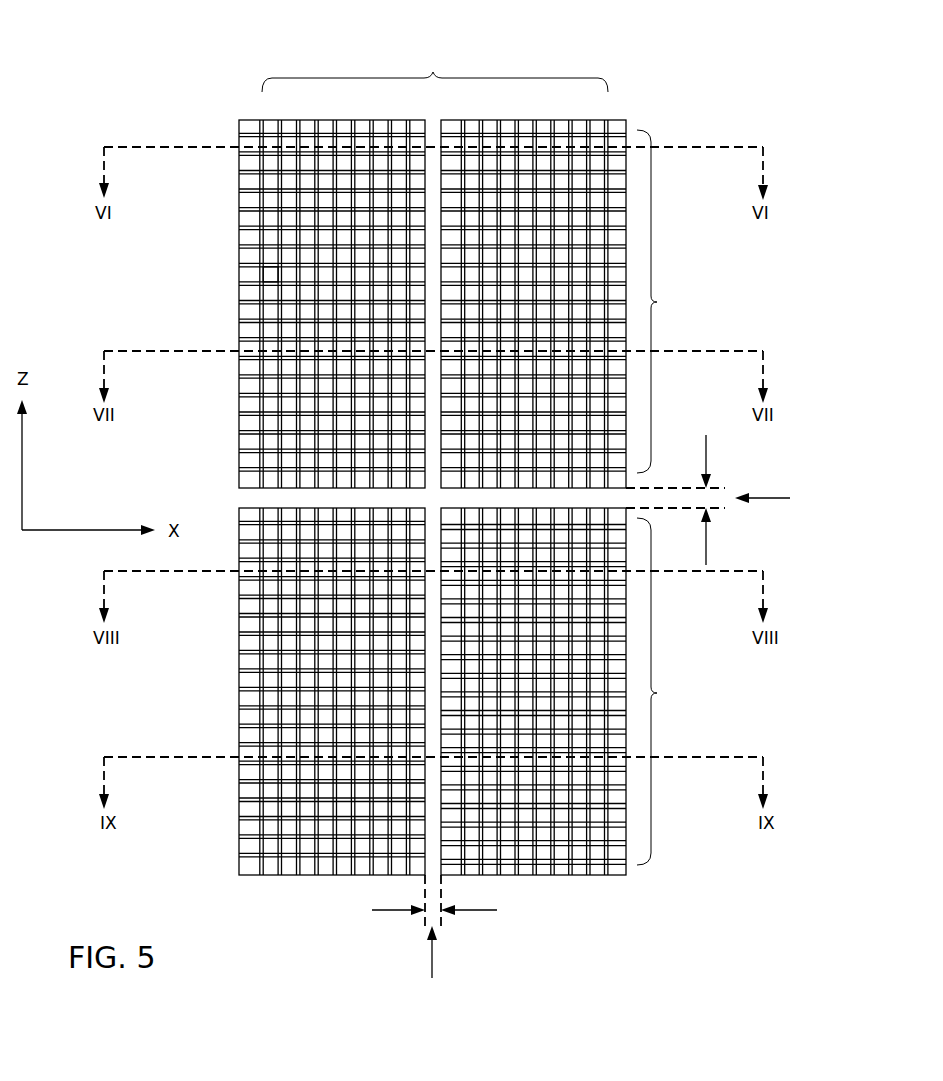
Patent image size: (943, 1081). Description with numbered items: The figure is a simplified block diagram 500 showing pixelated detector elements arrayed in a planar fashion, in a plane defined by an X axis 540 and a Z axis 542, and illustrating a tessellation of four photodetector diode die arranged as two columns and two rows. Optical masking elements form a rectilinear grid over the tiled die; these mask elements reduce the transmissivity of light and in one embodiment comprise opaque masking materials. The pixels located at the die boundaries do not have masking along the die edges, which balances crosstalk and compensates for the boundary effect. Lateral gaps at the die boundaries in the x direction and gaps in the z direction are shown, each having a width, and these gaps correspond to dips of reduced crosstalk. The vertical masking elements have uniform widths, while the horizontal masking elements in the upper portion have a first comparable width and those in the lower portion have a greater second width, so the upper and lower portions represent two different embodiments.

The simplified block diagram 500 is at (731, 61).
The Z axis 542 is at (22, 480).
The X axis 540 is at (68, 530).